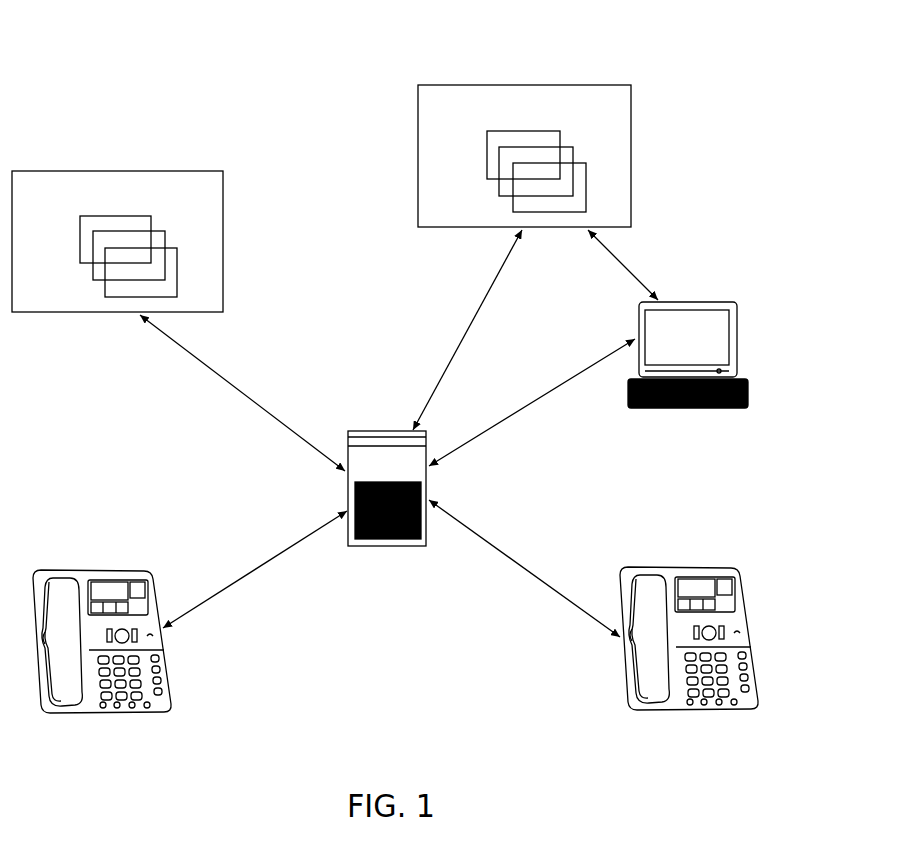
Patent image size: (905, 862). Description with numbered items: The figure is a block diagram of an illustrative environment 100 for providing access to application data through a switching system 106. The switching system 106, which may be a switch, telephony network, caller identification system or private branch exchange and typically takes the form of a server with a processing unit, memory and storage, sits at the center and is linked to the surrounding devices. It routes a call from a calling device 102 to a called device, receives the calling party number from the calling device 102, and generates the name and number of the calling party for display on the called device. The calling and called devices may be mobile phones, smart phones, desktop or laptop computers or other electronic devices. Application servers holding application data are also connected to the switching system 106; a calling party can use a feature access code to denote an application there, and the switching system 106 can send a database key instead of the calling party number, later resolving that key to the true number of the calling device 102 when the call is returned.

The environment 100 is at (263, 47).
The calling device 102 is at (170, 668).
The switching system 106 is at (384, 548).